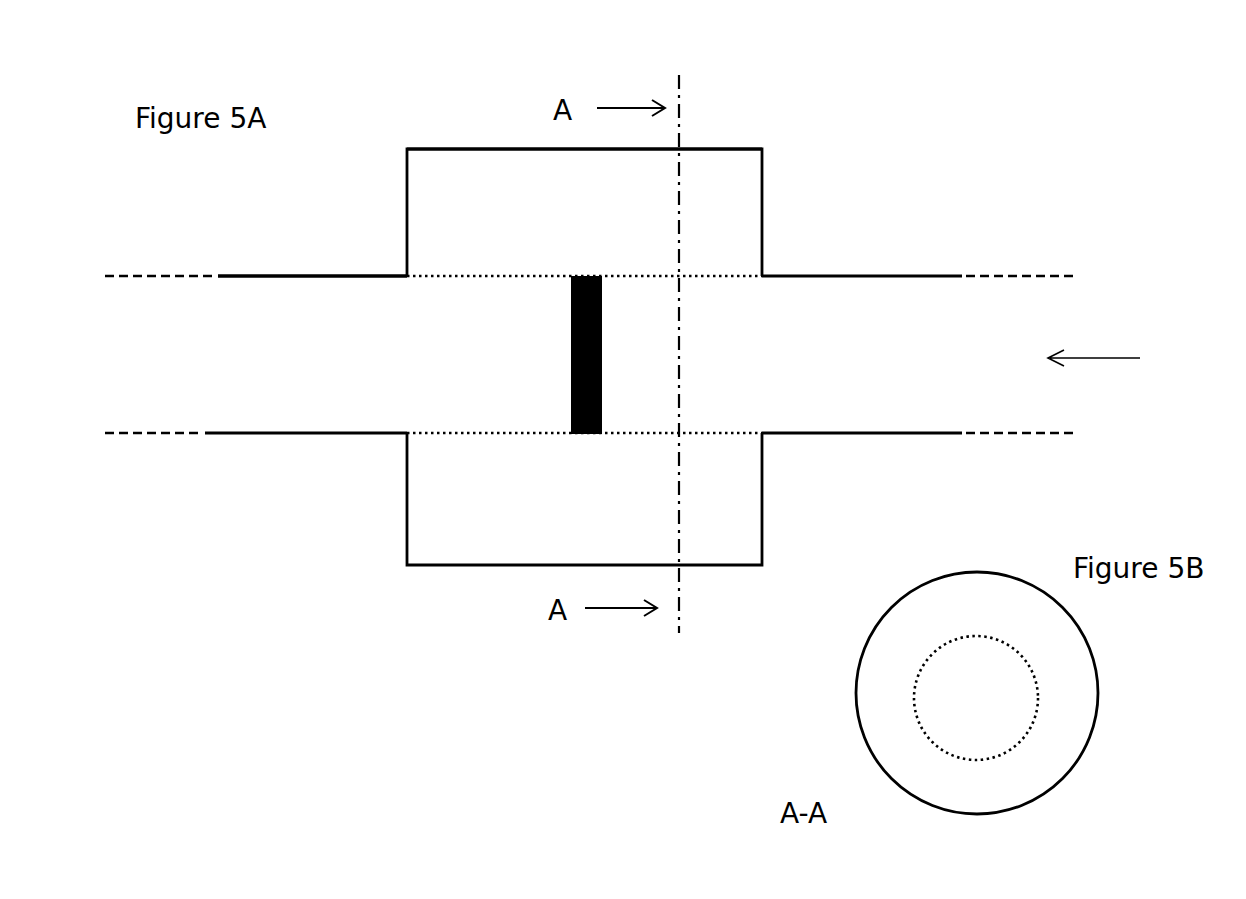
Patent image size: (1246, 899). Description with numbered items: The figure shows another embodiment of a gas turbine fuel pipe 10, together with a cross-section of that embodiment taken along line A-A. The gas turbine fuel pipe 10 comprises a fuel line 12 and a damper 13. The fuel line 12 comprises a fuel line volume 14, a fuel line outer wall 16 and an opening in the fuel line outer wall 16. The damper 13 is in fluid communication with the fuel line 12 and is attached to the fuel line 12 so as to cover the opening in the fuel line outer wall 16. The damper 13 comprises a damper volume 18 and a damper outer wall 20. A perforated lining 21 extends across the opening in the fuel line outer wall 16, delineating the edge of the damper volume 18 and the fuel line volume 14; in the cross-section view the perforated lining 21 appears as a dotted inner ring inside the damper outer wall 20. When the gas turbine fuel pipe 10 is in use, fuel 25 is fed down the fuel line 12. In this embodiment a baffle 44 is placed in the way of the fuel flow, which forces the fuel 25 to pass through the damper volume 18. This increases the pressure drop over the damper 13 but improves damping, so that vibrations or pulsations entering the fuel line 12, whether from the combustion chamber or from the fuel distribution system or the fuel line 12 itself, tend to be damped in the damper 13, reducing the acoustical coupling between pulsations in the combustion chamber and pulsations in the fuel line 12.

In FIG. 5A, the gas turbine fuel pipe 10 is at (979, 134).
In FIG. 5A, the fuel line 12 is at (265, 488).
In FIG. 5A, the damper 13 is at (758, 77).
In FIG. 5A, the fuel line volume 14 is at (321, 306).
In FIG. 5A, the fuel line outer wall 16 is at (328, 275).
In FIG. 5A, the damper volume 18 is at (523, 225).
In FIG. 5A, the damper outer wall 20 is at (440, 147).
In FIG. 5B, the damper outer wall 20 is at (990, 571).
In FIG. 5A, the perforated lining 21 is at (448, 275).
In FIG. 5B, the perforated lining 21 is at (962, 637).
In FIG. 5A, the fuel 25 is at (1110, 358).
In FIG. 5A, the baffle 44 is at (602, 312).